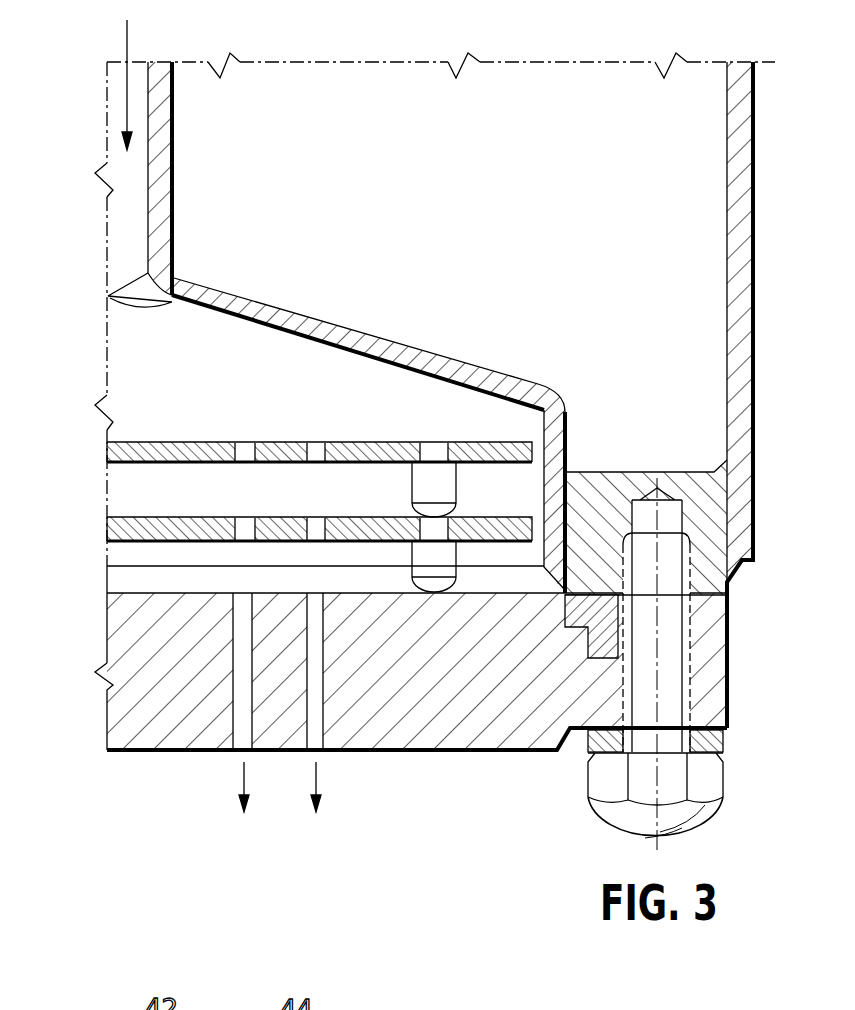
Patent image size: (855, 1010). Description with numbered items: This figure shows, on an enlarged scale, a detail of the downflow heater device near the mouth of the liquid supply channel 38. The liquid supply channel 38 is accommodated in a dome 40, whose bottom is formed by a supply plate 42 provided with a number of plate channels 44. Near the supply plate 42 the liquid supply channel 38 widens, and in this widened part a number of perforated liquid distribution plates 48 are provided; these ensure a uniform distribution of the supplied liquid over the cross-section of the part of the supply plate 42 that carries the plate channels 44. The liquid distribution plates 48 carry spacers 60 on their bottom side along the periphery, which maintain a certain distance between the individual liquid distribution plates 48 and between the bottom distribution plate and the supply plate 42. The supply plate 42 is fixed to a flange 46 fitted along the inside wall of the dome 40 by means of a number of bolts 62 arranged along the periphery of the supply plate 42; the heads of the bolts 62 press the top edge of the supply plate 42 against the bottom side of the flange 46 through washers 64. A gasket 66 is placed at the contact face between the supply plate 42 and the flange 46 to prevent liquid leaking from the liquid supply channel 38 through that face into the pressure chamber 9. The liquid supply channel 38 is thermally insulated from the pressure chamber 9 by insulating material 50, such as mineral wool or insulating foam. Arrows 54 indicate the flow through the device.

The pressure chamber 9 is at (798, 350).
The liquid supply channel 38 is at (108, 297).
The dome 40 is at (743, 215).
The supply plate 42 is at (507, 730).
The plate channels 44 is at (312, 710).
The flange 46 is at (710, 508).
The perforated liquid distribution plates 48 is at (110, 527).
The insulating material 50 is at (402, 97).
The air flow arrows 54 is at (316, 778).
The spacers 60 is at (423, 559).
The bolts 62 is at (668, 693).
The washers 64 is at (708, 743).
The gasket 66 is at (610, 633).